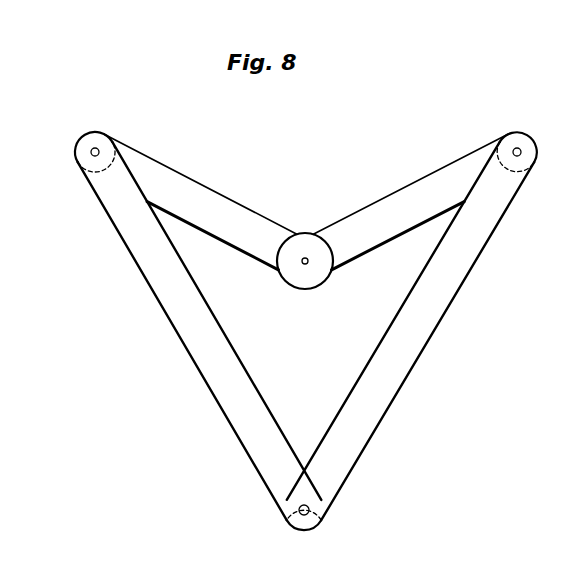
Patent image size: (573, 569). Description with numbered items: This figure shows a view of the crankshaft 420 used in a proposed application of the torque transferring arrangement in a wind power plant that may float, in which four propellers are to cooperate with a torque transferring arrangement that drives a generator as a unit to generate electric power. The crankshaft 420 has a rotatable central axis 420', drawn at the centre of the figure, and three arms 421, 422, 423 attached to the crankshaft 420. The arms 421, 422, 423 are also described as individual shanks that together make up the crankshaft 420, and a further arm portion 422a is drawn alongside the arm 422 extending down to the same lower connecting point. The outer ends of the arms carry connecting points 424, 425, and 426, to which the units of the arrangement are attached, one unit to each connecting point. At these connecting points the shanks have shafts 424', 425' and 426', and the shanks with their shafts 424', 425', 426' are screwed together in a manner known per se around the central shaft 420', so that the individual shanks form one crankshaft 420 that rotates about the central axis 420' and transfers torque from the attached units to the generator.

The crankshaft 420 is at (307, 289).
The rotatable central axis 420' is at (273, 212).
The arm 421 is at (387, 205).
The arm 422 is at (420, 332).
The arm 422a is at (178, 313).
The arm 423 is at (168, 185).
The connecting point 424 is at (481, 130).
The shaft 424' is at (514, 119).
The connecting point 425 is at (76, 130).
The shaft 425' is at (124, 121).
The connecting point 426 is at (258, 533).
The shaft 426' is at (366, 525).